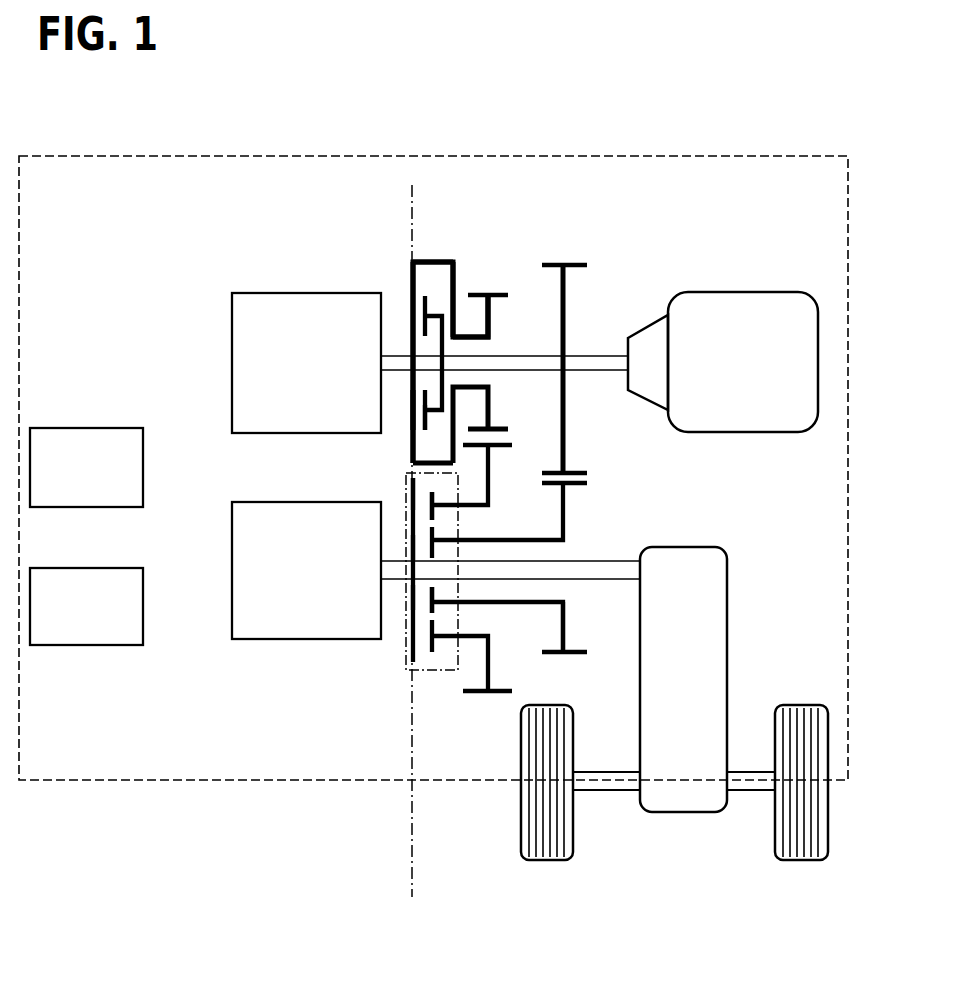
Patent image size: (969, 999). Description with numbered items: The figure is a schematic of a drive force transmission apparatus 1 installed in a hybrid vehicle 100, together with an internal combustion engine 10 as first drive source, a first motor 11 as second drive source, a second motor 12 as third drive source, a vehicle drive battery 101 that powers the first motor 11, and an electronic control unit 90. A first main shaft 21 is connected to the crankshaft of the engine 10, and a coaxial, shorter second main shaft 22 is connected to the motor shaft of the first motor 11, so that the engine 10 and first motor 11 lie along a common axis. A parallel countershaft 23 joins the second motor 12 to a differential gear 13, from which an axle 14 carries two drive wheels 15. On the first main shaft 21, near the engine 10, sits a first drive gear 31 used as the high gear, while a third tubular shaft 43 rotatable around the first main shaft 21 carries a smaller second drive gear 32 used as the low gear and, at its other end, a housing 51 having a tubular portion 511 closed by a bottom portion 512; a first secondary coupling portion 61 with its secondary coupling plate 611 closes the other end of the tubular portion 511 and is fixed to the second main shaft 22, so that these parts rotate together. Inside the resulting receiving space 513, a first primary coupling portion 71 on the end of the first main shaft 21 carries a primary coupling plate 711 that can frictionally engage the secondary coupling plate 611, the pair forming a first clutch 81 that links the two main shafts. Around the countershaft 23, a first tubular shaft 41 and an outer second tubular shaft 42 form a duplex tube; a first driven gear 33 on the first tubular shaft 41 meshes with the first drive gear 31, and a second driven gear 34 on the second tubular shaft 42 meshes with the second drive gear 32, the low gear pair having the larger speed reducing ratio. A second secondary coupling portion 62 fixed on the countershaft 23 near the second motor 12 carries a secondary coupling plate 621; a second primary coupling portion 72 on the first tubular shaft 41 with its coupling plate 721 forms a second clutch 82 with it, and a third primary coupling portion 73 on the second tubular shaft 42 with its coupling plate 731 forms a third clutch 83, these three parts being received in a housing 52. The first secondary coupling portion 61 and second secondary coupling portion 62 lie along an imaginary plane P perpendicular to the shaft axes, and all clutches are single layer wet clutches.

The drive force transmission apparatus 1 is at (527, 185).
The vehicle 100 is at (407, 155).
The imaginary plane P is at (410, 858).
The internal combustion engine 10 is at (743, 303).
The first motor 11 is at (232, 332).
The second motor 12 is at (232, 540).
The differential gear 13 is at (720, 597).
The axle 14 is at (622, 785).
The drive wheels 15 is at (545, 862).
The first main shaft 21 is at (592, 356).
The second main shaft 22 is at (395, 357).
The countershaft 23 is at (612, 565).
The first drive gear 31 is at (563, 265).
The second drive gear 32 is at (495, 293).
The first driven gear 33 is at (565, 655).
The second driven gear 34 is at (487, 695).
The first tubular shaft 41 is at (538, 540).
The second tubular shaft 42 is at (465, 505).
The third tubular shaft 43 is at (470, 335).
The housing 51 is at (437, 262).
The tubular portion 511 is at (428, 262).
The bottom portion 512 is at (458, 287).
The receiving space 513 is at (413, 268).
The housing 52 is at (433, 672).
The first secondary coupling portion 61 is at (428, 286).
The secondary coupling plate 611 is at (410, 310).
The second secondary coupling portion 62 is at (410, 653).
The secondary coupling plate 621 is at (410, 547).
The first primary coupling portion 71 is at (422, 397).
The primary coupling plate 711 is at (420, 422).
The second primary coupling portion 72 is at (434, 605).
The coupling plate 721 is at (432, 604).
The third primary coupling portion 73 is at (434, 512).
The coupling plate 731 is at (433, 508).
The first clutch 81 is at (397, 411).
The second clutch 82 is at (397, 604).
The third clutch 83 is at (399, 492).
The electronic control unit 90 is at (80, 645).
The vehicle drive battery 101 is at (80, 428).